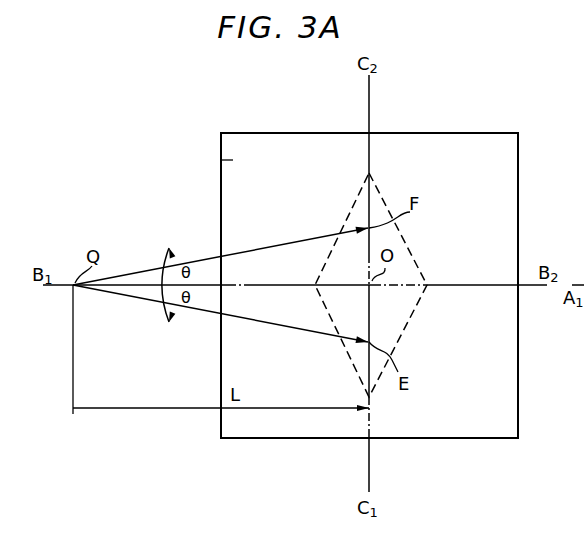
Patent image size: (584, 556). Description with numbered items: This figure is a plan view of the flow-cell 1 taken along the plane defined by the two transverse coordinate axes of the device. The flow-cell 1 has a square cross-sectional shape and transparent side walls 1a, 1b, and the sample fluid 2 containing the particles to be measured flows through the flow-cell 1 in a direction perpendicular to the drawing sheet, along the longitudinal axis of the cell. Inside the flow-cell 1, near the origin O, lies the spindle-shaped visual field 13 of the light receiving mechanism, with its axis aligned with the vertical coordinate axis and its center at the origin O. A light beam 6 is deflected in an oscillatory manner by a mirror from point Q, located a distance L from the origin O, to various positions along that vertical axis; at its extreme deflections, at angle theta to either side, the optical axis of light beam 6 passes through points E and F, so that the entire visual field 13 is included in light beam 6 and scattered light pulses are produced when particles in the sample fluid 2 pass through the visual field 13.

The flow-cell 1 is at (272, 133).
The transparent side wall 1a is at (221, 193).
The transparent side wall 1b is at (518, 172).
The sample fluid 2 is at (233, 160).
The light beam 6 is at (290, 244).
The visual field 13 is at (415, 262).